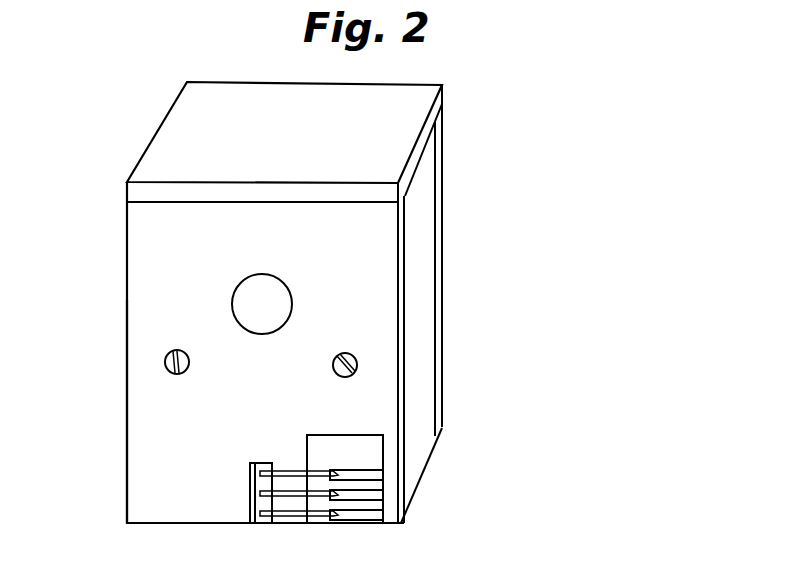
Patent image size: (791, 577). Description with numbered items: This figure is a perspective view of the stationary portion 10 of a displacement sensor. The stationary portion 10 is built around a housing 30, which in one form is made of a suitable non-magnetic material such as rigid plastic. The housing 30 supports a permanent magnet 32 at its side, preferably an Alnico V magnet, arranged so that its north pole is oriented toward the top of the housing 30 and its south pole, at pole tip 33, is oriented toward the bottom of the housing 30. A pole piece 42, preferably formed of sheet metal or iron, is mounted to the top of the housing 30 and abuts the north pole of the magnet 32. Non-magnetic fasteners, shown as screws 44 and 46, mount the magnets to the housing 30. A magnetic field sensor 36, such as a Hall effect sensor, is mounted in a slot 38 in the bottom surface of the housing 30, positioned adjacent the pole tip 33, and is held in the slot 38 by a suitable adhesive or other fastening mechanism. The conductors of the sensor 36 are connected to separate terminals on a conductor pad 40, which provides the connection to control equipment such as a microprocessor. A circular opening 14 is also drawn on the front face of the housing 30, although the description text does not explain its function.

The stationary portion 10 is at (114, 246).
The opening 14 is at (273, 273).
The housing 30 is at (127, 463).
The permanent magnet 32 is at (420, 443).
The pole tip 33 is at (423, 465).
The magnetic field sensor 36 is at (262, 523).
The slot 38 is at (255, 525).
The conductor pad 40 is at (357, 525).
The pole piece 42 is at (155, 133).
The screw 44 is at (166, 373).
The screw 46 is at (336, 376).